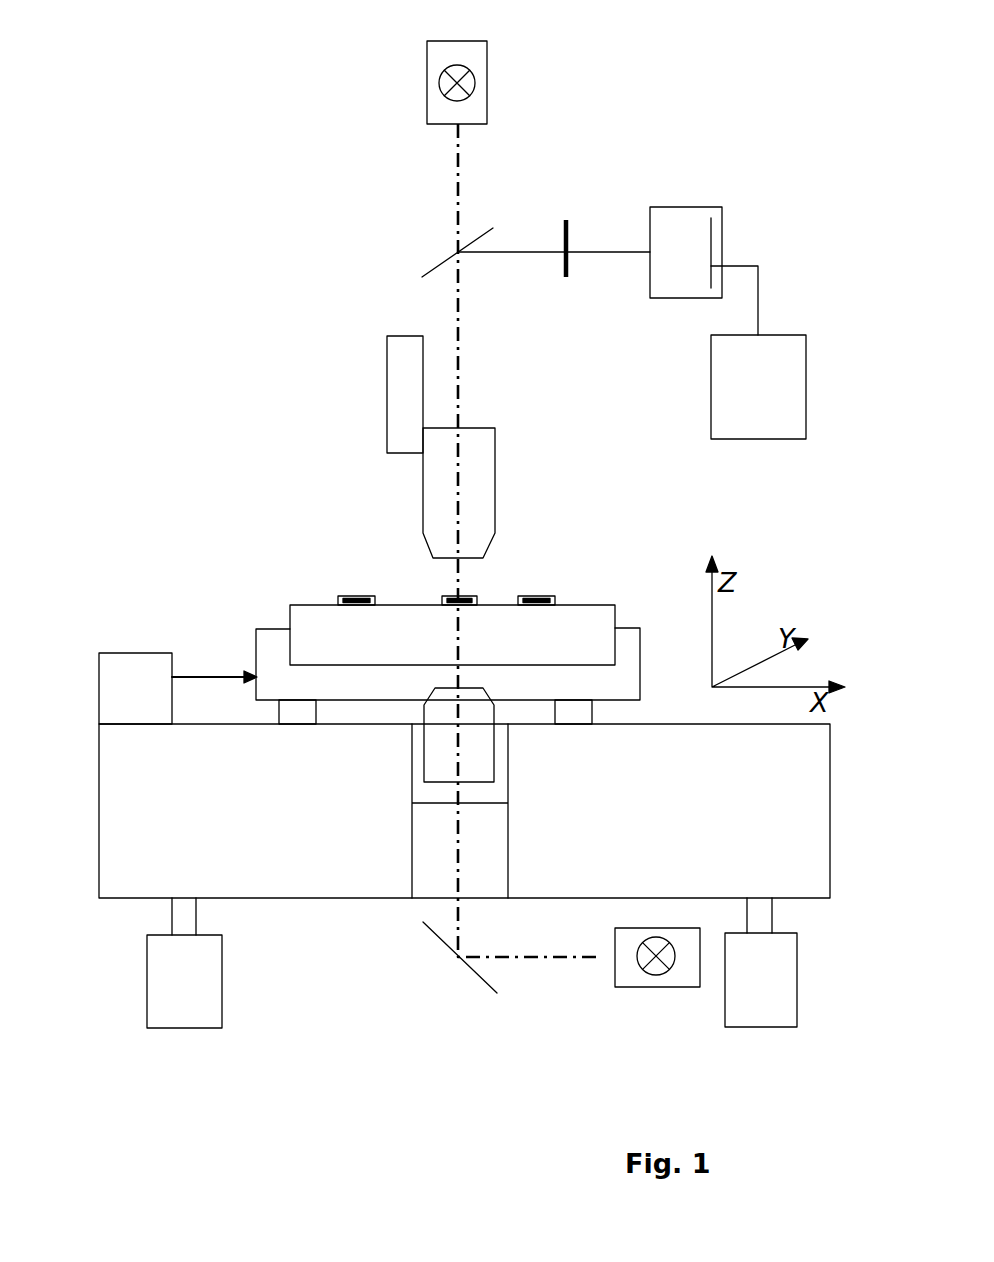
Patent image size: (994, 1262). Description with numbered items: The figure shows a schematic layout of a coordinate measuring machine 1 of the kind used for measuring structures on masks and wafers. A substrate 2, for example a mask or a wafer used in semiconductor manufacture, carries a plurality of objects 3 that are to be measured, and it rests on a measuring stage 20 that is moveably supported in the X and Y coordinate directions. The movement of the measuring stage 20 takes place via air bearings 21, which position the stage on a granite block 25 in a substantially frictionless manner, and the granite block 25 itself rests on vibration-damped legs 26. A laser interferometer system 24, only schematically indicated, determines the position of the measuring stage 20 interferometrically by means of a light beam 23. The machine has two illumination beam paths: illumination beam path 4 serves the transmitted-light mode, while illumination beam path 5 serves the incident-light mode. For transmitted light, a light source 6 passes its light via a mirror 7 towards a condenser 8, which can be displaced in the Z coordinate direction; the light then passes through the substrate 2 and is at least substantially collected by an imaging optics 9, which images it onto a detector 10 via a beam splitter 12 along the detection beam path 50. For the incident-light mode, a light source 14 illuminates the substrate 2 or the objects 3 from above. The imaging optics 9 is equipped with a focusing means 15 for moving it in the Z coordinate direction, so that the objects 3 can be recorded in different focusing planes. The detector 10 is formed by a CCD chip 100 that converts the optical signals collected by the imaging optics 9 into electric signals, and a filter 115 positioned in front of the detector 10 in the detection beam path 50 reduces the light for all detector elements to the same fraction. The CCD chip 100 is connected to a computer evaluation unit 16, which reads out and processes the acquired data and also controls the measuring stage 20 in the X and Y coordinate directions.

The coordinate measuring machine 1 is at (258, 509).
The substrate 2 is at (315, 617).
The objects 3 is at (542, 597).
The illumination beam path 4 is at (460, 743).
The illumination beam path 5 is at (457, 392).
The light source 6 is at (638, 987).
The mirror 7 is at (483, 983).
The condenser 8 is at (435, 745).
The imaging optics 9 is at (435, 487).
The detector 10 is at (680, 298).
The beam splitter 12 is at (457, 255).
The light source 14 is at (427, 70).
The focusing means 15 is at (398, 382).
The computer evaluation unit 16 is at (722, 392).
The measuring stage 20 is at (626, 684).
The air bearings 21 is at (302, 712).
The light beam 23 is at (223, 676).
The laser interferometer system 24 is at (123, 677).
The granite block 25 is at (123, 828).
The vibration-damped legs 26 is at (162, 993).
The detection beam path 50 is at (522, 253).
The CCD chip 100 is at (712, 240).
The filter 115 is at (578, 236).